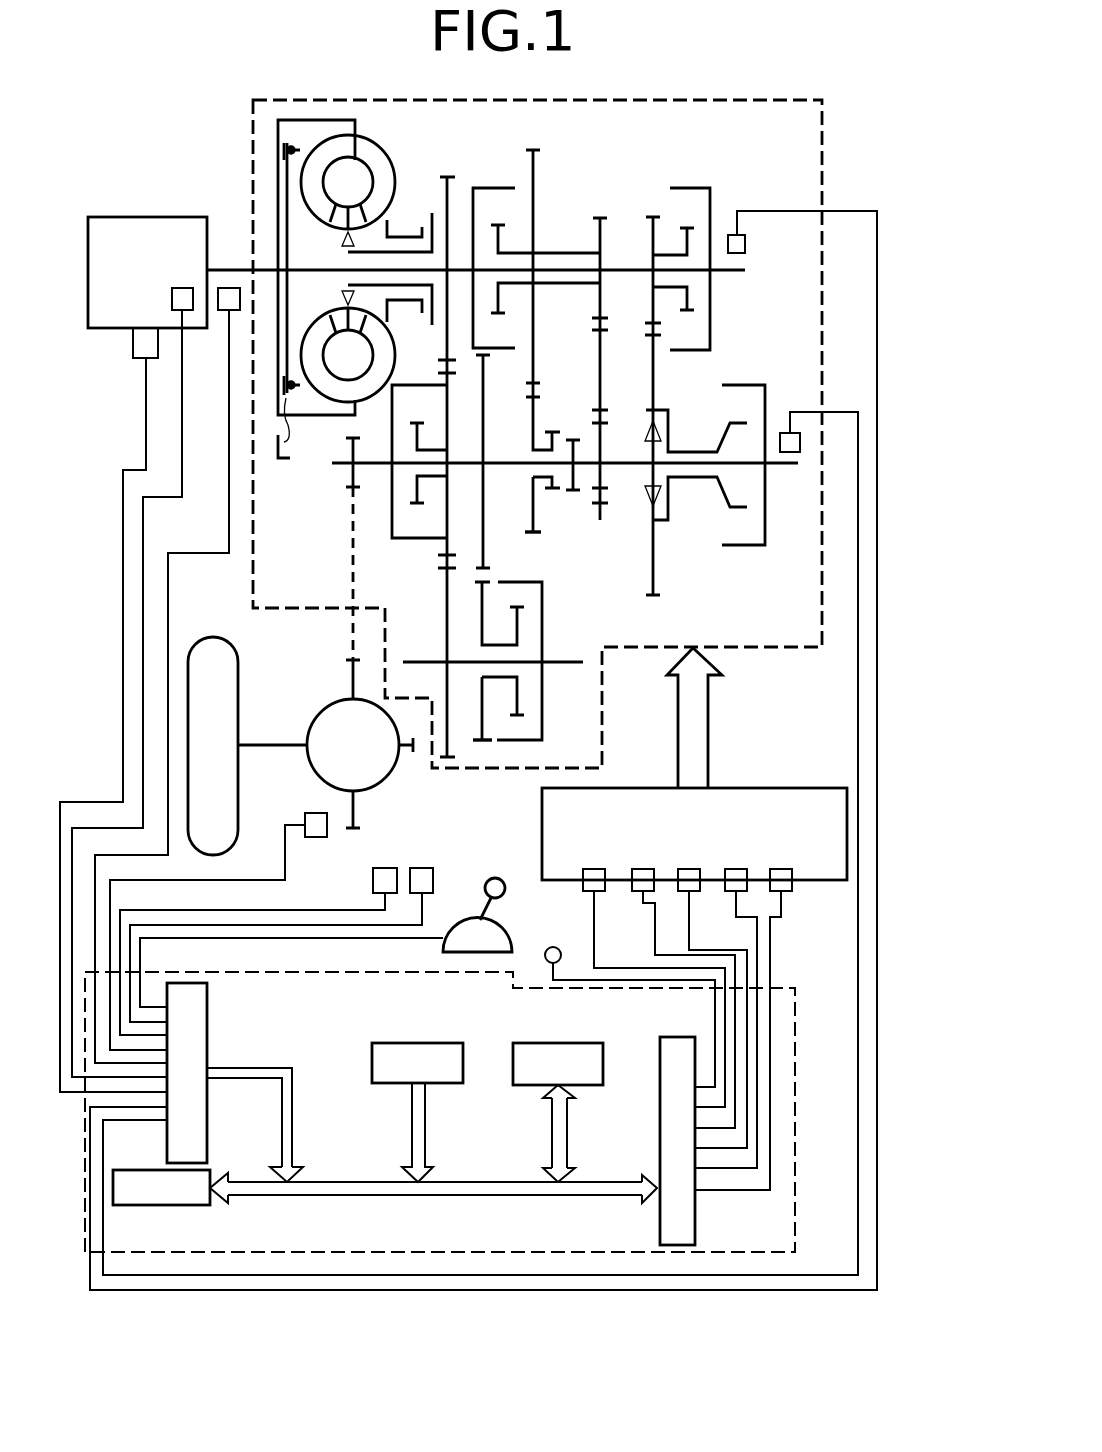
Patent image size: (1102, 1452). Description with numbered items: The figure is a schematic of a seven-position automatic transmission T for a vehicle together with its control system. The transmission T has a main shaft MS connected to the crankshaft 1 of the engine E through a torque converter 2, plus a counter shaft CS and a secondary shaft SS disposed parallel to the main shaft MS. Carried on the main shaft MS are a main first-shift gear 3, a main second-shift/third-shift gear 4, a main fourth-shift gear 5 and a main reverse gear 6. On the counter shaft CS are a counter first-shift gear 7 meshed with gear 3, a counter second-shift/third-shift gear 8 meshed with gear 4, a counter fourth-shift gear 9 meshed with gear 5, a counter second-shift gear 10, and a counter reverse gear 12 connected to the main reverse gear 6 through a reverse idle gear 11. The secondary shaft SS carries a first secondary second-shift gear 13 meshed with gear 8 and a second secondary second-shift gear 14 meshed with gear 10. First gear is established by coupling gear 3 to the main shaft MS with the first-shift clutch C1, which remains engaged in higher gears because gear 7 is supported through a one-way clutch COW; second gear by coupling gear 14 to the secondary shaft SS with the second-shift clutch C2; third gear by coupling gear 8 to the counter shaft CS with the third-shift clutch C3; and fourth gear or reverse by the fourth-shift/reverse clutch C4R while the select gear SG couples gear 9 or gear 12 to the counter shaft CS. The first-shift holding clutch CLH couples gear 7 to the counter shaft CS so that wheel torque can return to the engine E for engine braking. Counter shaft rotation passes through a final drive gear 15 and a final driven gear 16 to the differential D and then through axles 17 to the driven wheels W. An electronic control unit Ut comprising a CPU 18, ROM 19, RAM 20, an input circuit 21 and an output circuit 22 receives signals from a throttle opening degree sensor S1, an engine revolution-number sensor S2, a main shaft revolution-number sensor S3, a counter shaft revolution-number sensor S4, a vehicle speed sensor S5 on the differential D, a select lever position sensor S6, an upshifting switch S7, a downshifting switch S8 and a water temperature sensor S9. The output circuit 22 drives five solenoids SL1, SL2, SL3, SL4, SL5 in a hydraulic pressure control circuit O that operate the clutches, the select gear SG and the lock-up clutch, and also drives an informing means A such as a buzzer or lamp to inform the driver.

The crankshaft 1 is at (232, 268).
The torque converter 2 is at (395, 160).
The main first-shift gear 3 is at (653, 217).
The main second-shift/third-shift gear 4 is at (447, 177).
The main fourth-shift gear 5 is at (533, 150).
The main reverse gear 6 is at (600, 218).
The counter first-shift gear 7 is at (653, 595).
The counter second-shift/third-shift gear 8 is at (447, 560).
The counter fourth-shift gear 9 is at (533, 534).
The counter second-shift gear 10 is at (490, 358).
The reverse idle gear 11 is at (593, 325).
The counter reverse gear 12 is at (600, 520).
The first secondary second-shift gear 13 is at (447, 760).
The second secondary second-shift gear 14 is at (490, 742).
The final drive gear 15 is at (353, 490).
The final driven gear 16 is at (353, 660).
The axle 17 is at (298, 744).
The CPU 18 is at (185, 1205).
The ROM 19 is at (407, 1043).
The RAM 20 is at (556, 1043).
The input circuit 21 is at (208, 1028).
The output circuit 22 is at (660, 1133).
The engine E is at (180, 217).
The automatic transmission T is at (282, 615).
The main shaft MS is at (745, 272).
The counter shaft CS is at (793, 465).
The secondary shaft SS is at (566, 662).
The first-shift clutch C1 is at (690, 188).
The second-shift clutch C2 is at (513, 581).
The third-shift clutch C3 is at (424, 446).
The fourth-shift/reverse clutch C4R is at (536, 250).
The first-shift holding clutch CLH is at (733, 546).
The one-way clutch COW is at (668, 433).
The select gear SG is at (561, 432).
The differential D is at (318, 775).
The driven wheel W is at (212, 637).
The hydraulic pressure control circuit O is at (775, 788).
The throttle opening degree sensor S1 is at (133, 350).
The engine revolution-number sensor S2 is at (229, 310).
The main shaft revolution-number sensor S3 is at (745, 243).
The counter shaft revolution-number sensor S4 is at (786, 432).
The vehicle speed sensor S5 is at (316, 838).
The select lever position sensor S6 is at (500, 936).
The upshifting switch S7 is at (383, 868).
The downshifting switch S8 is at (425, 868).
The water temperature sensor S9 is at (172, 299).
The solenoid SL1 is at (590, 888).
The solenoid SL2 is at (642, 890).
The solenoid SL3 is at (690, 890).
The solenoid SL4 is at (742, 889).
The solenoid SL5 is at (785, 886).
The informing means A is at (546, 965).
The electronic control unit Ut is at (795, 1036).